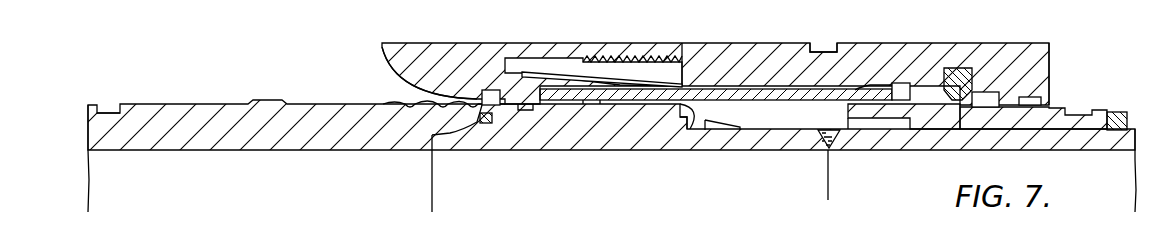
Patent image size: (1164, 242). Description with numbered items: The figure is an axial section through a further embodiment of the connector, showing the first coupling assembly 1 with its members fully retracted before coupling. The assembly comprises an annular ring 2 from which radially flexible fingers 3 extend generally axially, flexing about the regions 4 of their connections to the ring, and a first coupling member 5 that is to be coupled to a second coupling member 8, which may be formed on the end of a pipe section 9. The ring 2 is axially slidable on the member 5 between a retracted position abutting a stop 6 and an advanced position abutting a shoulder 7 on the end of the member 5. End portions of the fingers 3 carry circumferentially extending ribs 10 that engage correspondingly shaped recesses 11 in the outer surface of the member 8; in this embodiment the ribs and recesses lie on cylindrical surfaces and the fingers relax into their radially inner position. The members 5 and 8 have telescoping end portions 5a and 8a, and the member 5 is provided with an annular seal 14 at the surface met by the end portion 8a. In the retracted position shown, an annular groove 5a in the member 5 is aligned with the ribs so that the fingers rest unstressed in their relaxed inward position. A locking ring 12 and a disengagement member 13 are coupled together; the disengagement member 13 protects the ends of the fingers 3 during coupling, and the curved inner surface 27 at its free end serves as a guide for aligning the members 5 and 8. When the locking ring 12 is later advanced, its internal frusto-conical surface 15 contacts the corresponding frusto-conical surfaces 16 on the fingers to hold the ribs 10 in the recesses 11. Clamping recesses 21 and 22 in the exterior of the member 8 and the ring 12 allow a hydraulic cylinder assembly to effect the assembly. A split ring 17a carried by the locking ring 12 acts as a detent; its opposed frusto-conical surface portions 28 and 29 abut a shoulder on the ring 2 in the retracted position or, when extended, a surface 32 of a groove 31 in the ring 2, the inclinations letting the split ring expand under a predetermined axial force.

The first coupling assembly 1 is at (1101, 76).
The annular ring 2 is at (866, 118).
The fingers 3 is at (752, 104).
The regions 4 is at (820, 100).
The first coupling member 5 is at (706, 140).
The annular groove 5a is at (460, 140).
The stop 6 is at (1119, 112).
The shoulder 7 is at (690, 130).
The second coupling member 8 is at (356, 148).
The telescoping end portion 8a is at (474, 124).
The pipe section 9 is at (124, 132).
The ribs 10 is at (598, 110).
The recesses 11 is at (398, 97).
The locking ring 12 is at (1010, 60).
The disengagement member 13 is at (465, 55).
The annular seal 14 is at (490, 118).
The frusto-conical surface 15 is at (618, 85).
The frusto-conical surfaces 16 is at (552, 78).
The split ring 17a is at (960, 78).
The clamping recess 21 is at (116, 106).
The clamping recess 22 is at (815, 48).
The inner surface 27 is at (392, 77).
The frusto-conical annular surface portion 28 is at (952, 105).
The frusto-conical annular surface portion 29 is at (968, 103).
The groove 31 is at (898, 84).
The surface 32 is at (905, 96).